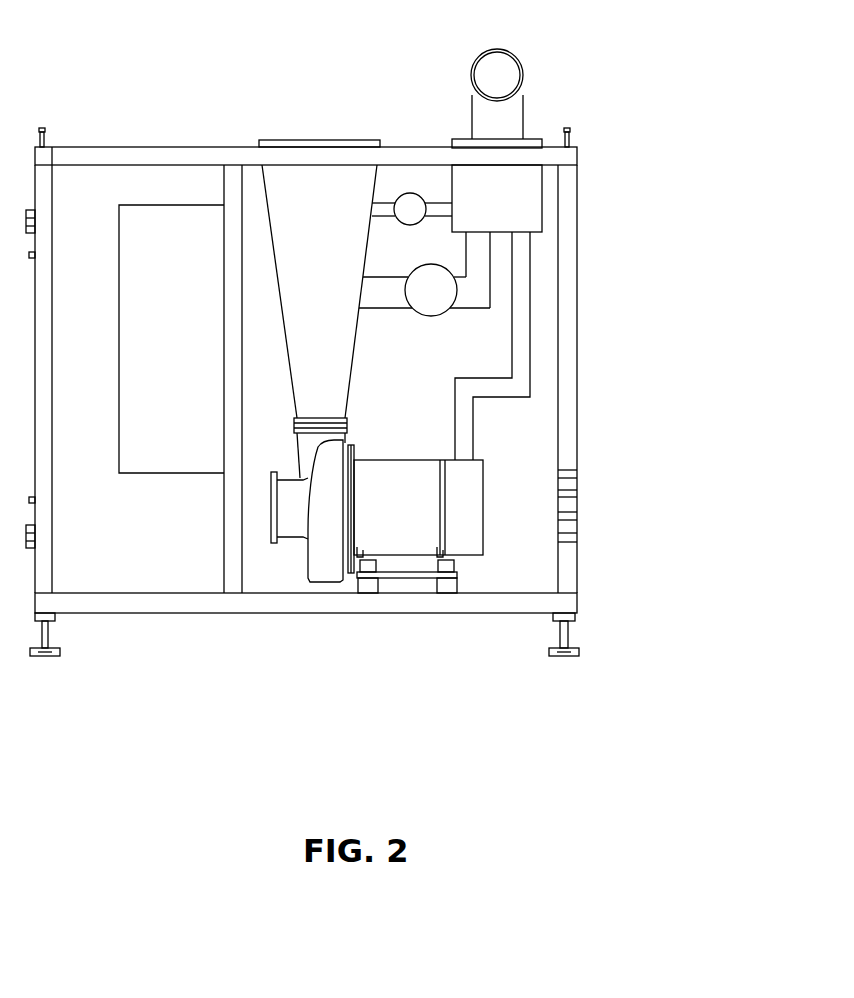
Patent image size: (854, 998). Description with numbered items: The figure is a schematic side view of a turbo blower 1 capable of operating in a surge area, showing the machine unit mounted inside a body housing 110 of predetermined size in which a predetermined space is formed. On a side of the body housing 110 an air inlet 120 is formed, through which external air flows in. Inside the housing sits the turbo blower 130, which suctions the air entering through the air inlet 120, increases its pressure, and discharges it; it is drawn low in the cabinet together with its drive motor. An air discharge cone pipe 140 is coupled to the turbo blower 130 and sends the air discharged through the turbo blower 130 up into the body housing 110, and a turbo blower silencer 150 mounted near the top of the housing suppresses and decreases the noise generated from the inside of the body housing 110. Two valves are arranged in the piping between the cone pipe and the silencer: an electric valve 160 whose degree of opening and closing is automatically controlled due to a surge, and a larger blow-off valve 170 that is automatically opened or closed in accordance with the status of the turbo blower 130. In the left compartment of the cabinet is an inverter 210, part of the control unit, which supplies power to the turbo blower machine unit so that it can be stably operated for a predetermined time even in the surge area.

The turbo blower 1 is at (57, 26).
The body housing 110 is at (137, 147).
The air inlet 120 is at (576, 470).
The turbo blower 130 is at (317, 568).
The air discharge cone pipe 140 is at (310, 140).
The turbo blower silencer 150 is at (542, 198).
The electric valve 160 is at (410, 193).
The blow-off valve 170 is at (442, 305).
The inverter 210 is at (163, 205).